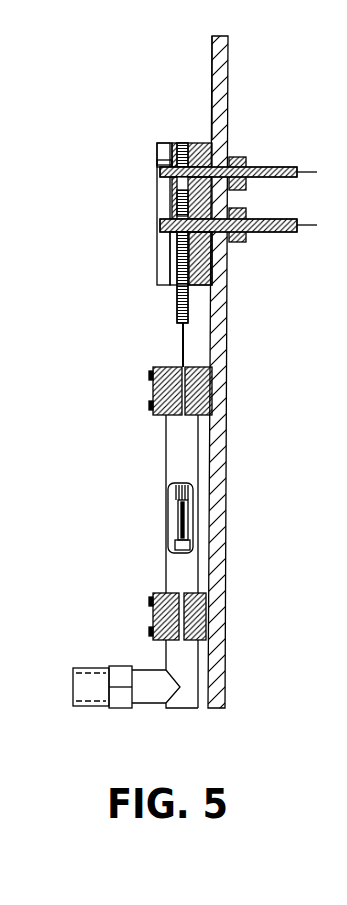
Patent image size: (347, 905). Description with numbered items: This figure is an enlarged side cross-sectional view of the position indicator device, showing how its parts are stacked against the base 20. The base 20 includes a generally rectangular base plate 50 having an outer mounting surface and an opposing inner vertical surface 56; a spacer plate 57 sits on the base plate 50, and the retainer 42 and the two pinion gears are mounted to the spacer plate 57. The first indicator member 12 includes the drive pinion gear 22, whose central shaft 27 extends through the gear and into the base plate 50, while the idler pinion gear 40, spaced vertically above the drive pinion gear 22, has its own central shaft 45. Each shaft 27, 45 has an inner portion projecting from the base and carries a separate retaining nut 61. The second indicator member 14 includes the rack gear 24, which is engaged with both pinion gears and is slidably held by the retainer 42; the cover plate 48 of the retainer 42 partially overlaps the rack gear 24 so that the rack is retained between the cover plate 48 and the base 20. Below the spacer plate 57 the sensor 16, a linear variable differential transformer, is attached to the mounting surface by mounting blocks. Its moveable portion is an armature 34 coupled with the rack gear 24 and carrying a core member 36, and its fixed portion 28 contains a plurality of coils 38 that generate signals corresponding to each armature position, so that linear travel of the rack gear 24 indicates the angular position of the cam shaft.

The first indicator member 12 is at (150, 228).
The second indicator member 14 is at (138, 319).
The sensor 16 is at (133, 424).
The base 20 is at (240, 96).
The drive pinion gear 22 is at (166, 204).
The rack gear 24 is at (169, 296).
The central shaft 27 is at (283, 219).
The fixed portion 28 is at (157, 461).
The armature 34 is at (171, 348).
The core member 36 is at (188, 519).
The coils 38 is at (190, 489).
The idler pinion gear 40 is at (157, 162).
The retainer 42 is at (148, 140).
The central shaft 45 is at (283, 167).
The cover plate 48 is at (178, 266).
The base plate 50 is at (202, 89).
The inner vertical surface 56 is at (228, 386).
The spacer plate 57 is at (193, 135).
The retaining nut 61 is at (236, 157).